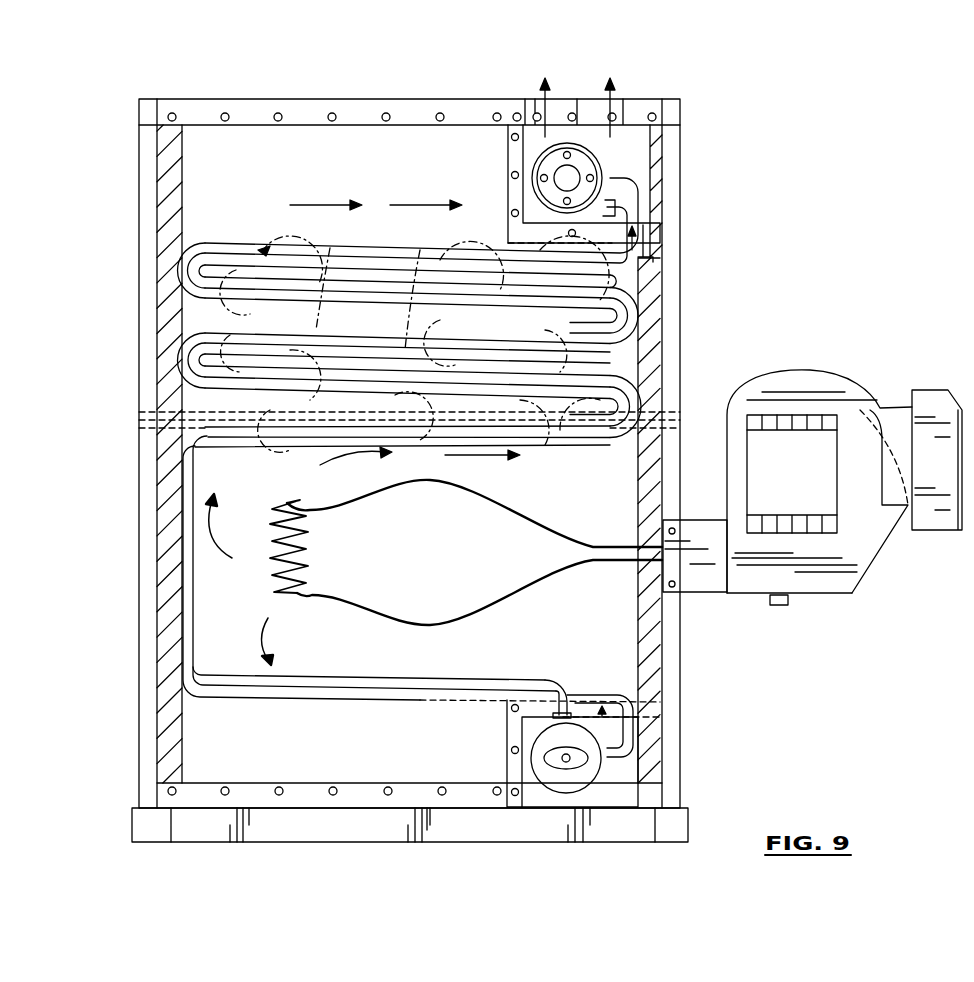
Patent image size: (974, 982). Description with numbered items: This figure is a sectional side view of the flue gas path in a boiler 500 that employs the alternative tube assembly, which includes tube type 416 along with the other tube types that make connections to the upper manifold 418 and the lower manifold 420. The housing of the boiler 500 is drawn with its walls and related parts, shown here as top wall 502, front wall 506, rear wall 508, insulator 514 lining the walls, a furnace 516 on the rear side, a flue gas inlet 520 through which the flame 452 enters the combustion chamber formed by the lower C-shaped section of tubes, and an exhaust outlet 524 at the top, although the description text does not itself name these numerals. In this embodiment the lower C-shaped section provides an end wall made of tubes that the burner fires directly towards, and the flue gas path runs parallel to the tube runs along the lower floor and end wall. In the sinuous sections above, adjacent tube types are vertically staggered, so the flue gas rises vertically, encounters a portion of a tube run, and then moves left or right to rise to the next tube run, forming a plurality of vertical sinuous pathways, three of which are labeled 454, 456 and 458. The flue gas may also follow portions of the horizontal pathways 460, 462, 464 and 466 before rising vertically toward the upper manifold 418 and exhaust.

The boiler 500 is at (716, 155).
The top frame panel 502 is at (312, 105).
The left housing wall 506 is at (139, 147).
The right housing wall 508 is at (672, 390).
The insulation 514 is at (183, 150).
The blower 516 is at (843, 378).
The burner mount 520 is at (676, 560).
The exhaust outlet 524 is at (563, 105).
The tube type 416 is at (436, 676).
The upper manifold 418 is at (603, 157).
The lower manifold 420 is at (587, 782).
The burner flame 452 is at (282, 495).
The vertical sinuous pathway 454 is at (257, 240).
The vertical sinuous pathway 456 is at (350, 235).
The vertical sinuous pathway 458 is at (440, 240).
The horizontal pathway 460 is at (440, 458).
The horizontal pathway 462 is at (553, 440).
The horizontal pathway 464 is at (458, 240).
The horizontal pathway 466 is at (668, 285).